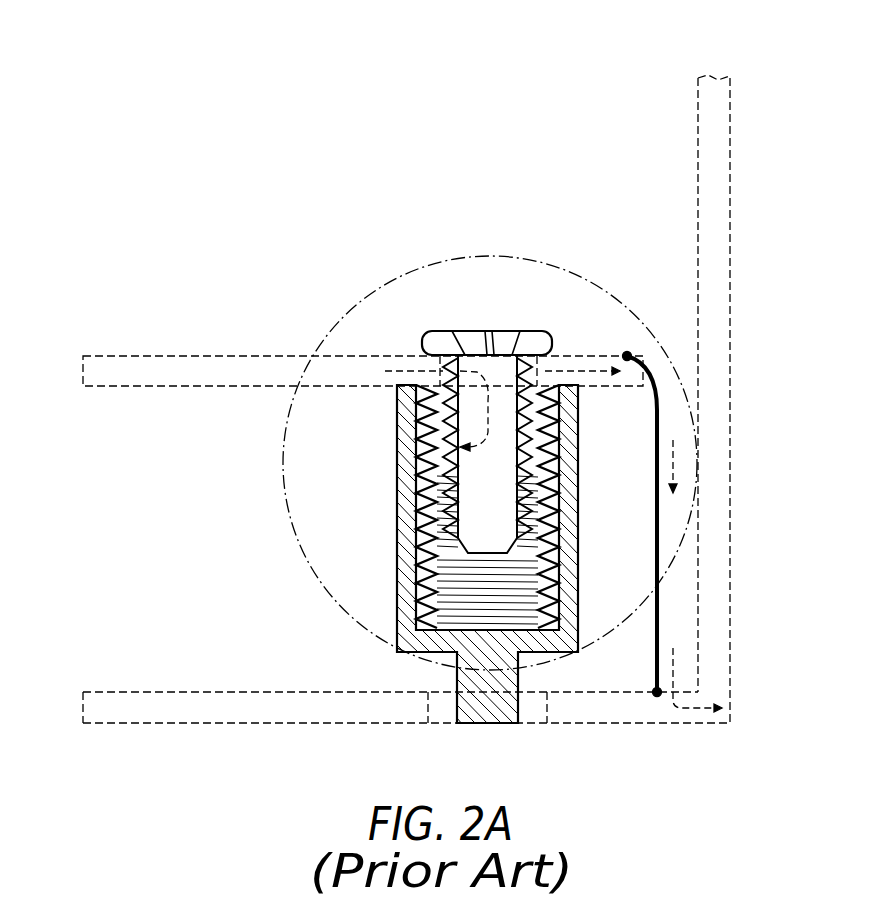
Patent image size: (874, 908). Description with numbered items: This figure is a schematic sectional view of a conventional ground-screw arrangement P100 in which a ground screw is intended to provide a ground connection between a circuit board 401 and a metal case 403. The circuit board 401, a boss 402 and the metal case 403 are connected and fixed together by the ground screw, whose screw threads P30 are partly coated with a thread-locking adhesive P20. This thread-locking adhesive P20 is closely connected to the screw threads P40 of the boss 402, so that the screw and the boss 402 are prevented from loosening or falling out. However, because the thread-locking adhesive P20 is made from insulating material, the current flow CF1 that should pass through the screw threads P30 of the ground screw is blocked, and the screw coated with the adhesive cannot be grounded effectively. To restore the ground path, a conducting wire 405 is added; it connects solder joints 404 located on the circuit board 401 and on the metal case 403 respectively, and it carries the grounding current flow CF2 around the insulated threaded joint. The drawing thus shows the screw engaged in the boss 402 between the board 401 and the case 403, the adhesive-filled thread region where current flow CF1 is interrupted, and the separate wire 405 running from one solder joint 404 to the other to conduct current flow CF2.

The prior art fastening assembly P100 is at (90, 41).
The circuit board 401 is at (137, 355).
The boss 402 is at (479, 554).
The metal case 403 is at (730, 553).
The solder joints 404 is at (628, 354).
The conducting wire 405 is at (658, 617).
The current flow CF1 is at (411, 405).
The grounding current flow CF2 is at (570, 370).
The thread-locking adhesive P20 is at (560, 431).
The screw threads P30 is at (560, 508).
The screw threads P40 is at (560, 582).